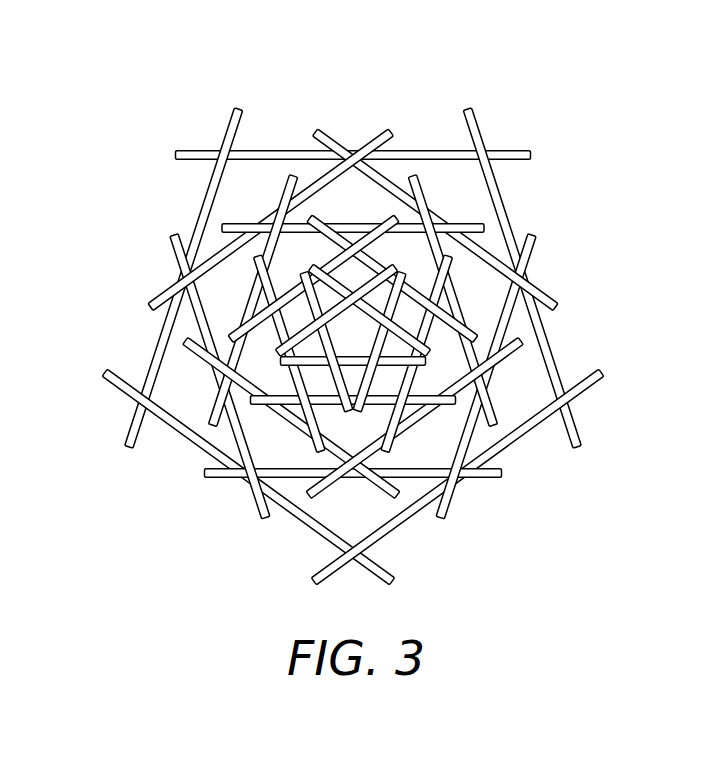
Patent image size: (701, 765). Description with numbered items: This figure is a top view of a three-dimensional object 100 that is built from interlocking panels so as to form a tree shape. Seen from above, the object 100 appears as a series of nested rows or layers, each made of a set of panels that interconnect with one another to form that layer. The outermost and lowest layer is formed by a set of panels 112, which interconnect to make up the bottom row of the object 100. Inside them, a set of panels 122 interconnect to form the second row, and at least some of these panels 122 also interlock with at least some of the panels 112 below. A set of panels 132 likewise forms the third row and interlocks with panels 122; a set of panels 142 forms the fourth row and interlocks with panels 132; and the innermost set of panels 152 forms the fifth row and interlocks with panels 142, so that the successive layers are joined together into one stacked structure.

The three-dimensional object 100 is at (366, 317).
The set of panels 112 is at (532, 424).
The set of panels 122 is at (235, 430).
The set of panels 132 is at (197, 338).
The set of panels 142 is at (295, 298).
The set of panels 152 is at (366, 288).